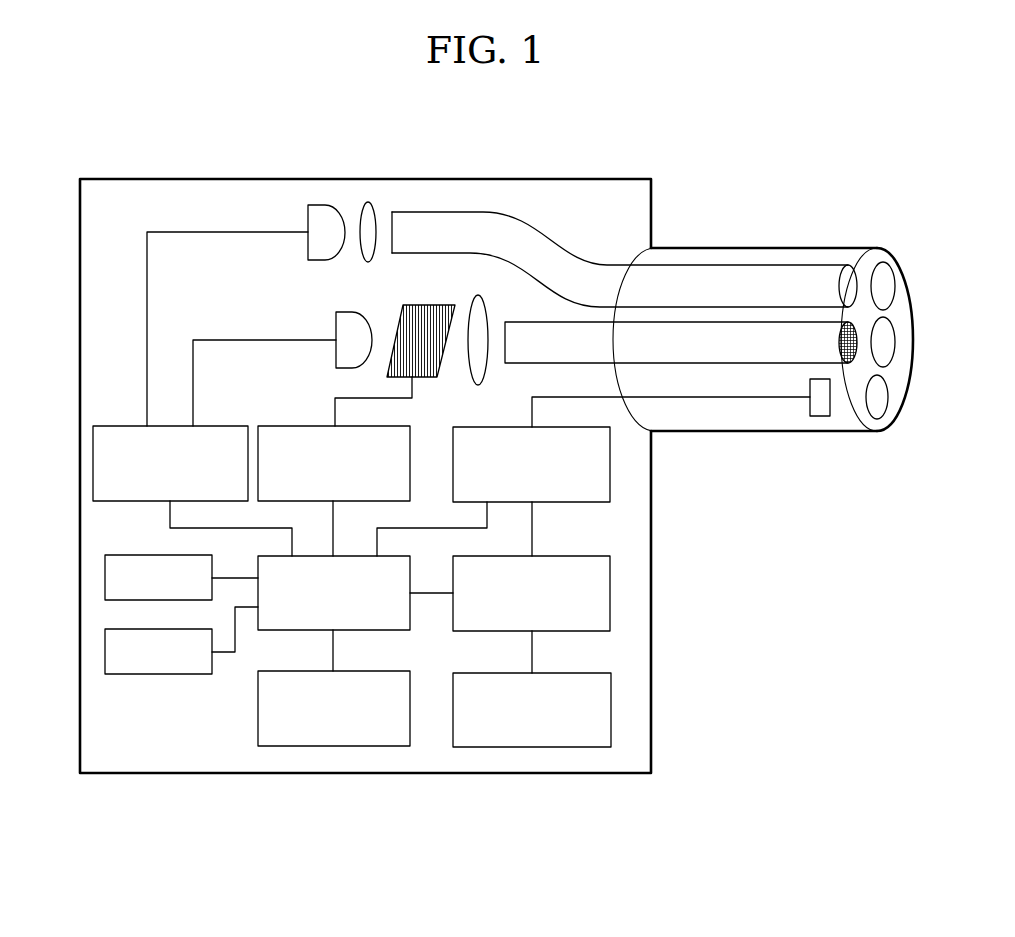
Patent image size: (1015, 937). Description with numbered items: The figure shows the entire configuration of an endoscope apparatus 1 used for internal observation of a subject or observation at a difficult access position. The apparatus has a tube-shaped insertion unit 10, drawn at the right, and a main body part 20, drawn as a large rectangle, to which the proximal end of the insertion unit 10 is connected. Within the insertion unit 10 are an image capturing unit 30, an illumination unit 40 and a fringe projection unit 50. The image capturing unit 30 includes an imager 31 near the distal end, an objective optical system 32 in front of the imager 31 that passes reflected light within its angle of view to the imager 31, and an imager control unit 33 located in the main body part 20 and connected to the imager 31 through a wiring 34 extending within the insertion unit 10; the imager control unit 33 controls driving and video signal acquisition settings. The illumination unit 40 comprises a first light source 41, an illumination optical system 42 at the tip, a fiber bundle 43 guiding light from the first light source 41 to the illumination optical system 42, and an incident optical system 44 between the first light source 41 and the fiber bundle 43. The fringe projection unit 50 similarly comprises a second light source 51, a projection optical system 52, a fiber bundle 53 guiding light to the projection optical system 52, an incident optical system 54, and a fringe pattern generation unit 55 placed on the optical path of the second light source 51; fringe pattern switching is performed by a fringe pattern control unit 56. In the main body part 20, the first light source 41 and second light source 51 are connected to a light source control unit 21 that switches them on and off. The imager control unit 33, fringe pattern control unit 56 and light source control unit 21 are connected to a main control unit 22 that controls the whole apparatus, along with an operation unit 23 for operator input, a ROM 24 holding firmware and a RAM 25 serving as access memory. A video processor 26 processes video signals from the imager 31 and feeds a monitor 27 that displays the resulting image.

The endoscope apparatus 1 is at (817, 154).
The insertion unit 10 is at (812, 435).
The main body part 20 is at (558, 790).
The light source control unit 21 is at (92, 463).
The main control unit 22 is at (373, 633).
The operation unit 23 is at (257, 708).
The ROM 24 is at (104, 578).
The RAM 25 is at (104, 652).
The video processor 26 is at (610, 592).
The monitor 27 is at (611, 711).
The image capturing unit 30 is at (837, 415).
The imager 31 is at (820, 417).
The objective optical system 32 is at (893, 401).
The imager control unit 33 is at (610, 472).
The wiring 34 is at (715, 398).
The illumination unit 40 is at (822, 259).
The first light source 41 is at (322, 204).
The illumination optical system 42 is at (894, 288).
The fiber bundle 43 is at (707, 280).
The incident optical system 44 is at (374, 205).
The fringe projection unit 50 is at (893, 365).
The second light source 51 is at (334, 322).
The projection optical system 52 is at (894, 343).
The fiber bundle 53 is at (763, 330).
The incident optical system 54 is at (469, 305).
The fringe pattern generation unit 55 is at (401, 311).
The fringe pattern control unit 56 is at (298, 425).